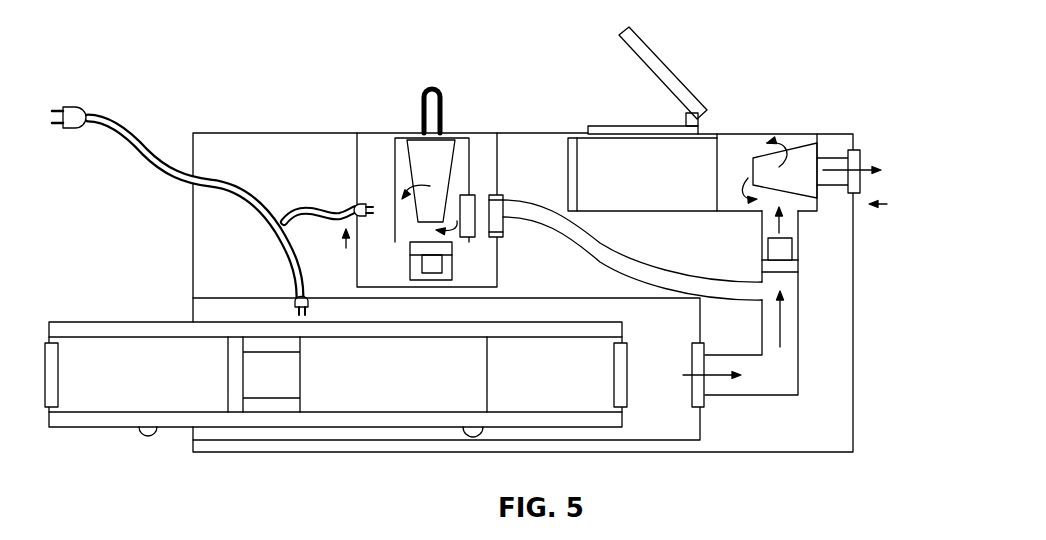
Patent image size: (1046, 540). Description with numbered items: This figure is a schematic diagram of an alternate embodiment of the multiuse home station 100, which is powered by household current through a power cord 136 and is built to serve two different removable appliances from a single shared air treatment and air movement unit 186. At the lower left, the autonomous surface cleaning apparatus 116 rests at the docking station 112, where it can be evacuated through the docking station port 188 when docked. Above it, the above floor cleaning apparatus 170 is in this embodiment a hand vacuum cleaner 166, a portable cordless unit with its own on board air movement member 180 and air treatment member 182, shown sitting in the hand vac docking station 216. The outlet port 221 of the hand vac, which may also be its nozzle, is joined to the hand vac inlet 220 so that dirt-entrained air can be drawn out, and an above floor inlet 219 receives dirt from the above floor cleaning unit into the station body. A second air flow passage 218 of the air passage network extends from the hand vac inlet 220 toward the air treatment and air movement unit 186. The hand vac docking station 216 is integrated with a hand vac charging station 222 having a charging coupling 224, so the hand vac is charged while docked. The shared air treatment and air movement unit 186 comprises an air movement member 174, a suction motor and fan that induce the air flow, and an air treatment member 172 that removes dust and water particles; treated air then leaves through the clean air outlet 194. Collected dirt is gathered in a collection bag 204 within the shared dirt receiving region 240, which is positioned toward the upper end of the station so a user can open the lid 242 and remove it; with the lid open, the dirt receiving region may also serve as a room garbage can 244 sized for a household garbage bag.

The multiuse home station 100 is at (237, 51).
The power cord 136 is at (125, 129).
The docking station 112 is at (213, 297).
The autonomous surface cleaning apparatus 116 is at (133, 306).
The hand vacuum cleaner 166 is at (392, 108).
The hand vac docking station 216 is at (356, 156).
The charging coupling 224 is at (356, 207).
The hand vac charging station 222 is at (330, 253).
The air treatment member 182 is at (398, 243).
The air movement member 180 is at (440, 273).
The above floor cleaning apparatus 170 is at (465, 92).
The collection bag 204 is at (568, 172).
The shared dirt receiving region 240 is at (574, 153).
The room garbage can 244 is at (623, 102).
The lid 242 is at (652, 52).
The above floor inlet 219 is at (498, 195).
The hand vac inlet 220 is at (503, 226).
The outlet port 221 is at (473, 233).
The second air flow passage 218 is at (604, 236).
The air movement member 174 is at (754, 253).
The air treatment member 172 is at (827, 141).
The clean air outlet 194 is at (863, 152).
The air treatment and air movement unit 186 is at (901, 205).
The docking station port 188 is at (704, 400).